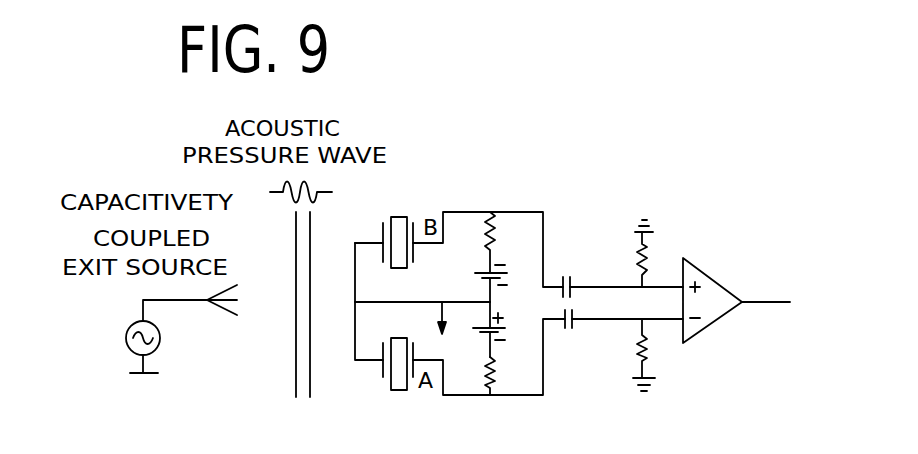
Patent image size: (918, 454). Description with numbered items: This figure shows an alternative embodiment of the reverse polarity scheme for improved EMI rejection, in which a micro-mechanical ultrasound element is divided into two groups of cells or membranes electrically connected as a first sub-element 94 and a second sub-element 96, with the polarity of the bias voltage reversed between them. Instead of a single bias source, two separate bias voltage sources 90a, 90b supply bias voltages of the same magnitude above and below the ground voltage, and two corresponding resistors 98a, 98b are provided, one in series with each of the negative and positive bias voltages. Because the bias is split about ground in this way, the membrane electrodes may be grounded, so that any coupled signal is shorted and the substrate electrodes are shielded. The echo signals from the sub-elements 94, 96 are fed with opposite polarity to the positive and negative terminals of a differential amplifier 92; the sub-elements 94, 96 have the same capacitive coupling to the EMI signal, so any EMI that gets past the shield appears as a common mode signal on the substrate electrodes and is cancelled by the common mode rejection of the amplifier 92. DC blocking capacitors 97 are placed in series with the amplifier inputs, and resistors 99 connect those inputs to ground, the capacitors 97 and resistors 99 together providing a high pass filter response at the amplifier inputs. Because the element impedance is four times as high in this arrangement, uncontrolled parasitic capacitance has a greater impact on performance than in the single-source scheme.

The differential amplifier 92 is at (714, 283).
The sub-element 94 is at (393, 216).
The sub-element 96 is at (393, 391).
The DC blocking capacitors 97 is at (568, 275).
The resistor 98a is at (497, 242).
The resistor 98b is at (497, 370).
The bias voltage source 90a is at (510, 275).
The bias voltage source 90b is at (510, 328).
The resistors 99 is at (130, 327).